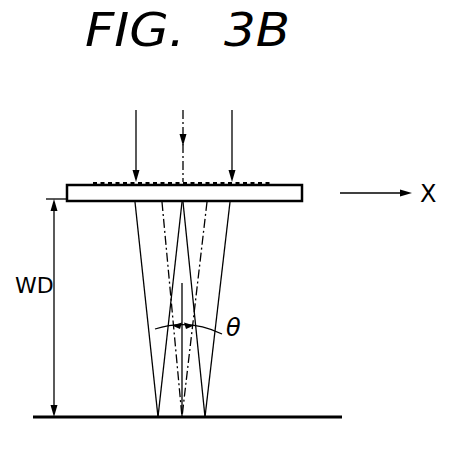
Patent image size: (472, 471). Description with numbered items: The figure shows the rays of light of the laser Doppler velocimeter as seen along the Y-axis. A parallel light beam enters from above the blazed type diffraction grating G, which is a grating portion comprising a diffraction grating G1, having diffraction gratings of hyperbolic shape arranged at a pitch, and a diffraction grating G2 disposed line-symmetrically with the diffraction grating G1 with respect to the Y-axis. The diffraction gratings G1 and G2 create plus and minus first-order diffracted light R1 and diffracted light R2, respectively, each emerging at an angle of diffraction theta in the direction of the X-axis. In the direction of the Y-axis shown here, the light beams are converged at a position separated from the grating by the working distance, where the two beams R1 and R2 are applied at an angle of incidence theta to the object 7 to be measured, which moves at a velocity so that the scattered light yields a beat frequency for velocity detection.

The blazed type diffraction grating G is at (287, 190).
The diffraction grating G1 is at (155, 180).
The diffraction grating G2 is at (213, 180).
The first-order diffracted light R1 is at (202, 243).
The diffracted light R2 is at (166, 243).
The object to be measured 7 is at (310, 417).